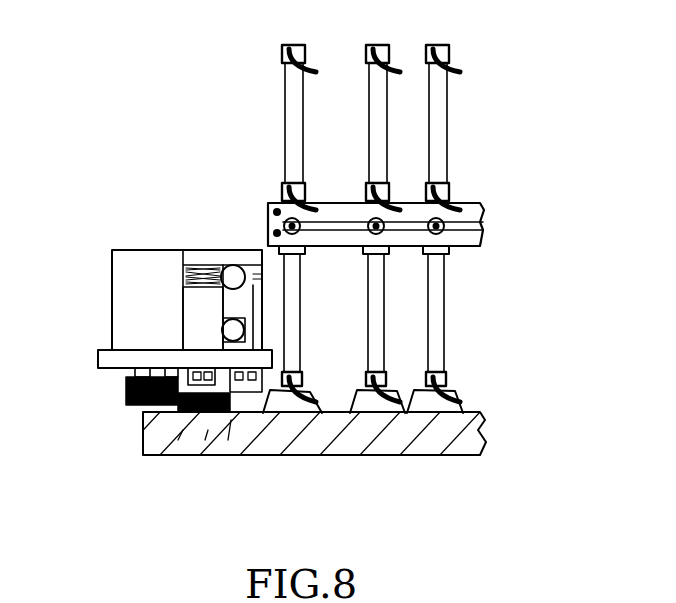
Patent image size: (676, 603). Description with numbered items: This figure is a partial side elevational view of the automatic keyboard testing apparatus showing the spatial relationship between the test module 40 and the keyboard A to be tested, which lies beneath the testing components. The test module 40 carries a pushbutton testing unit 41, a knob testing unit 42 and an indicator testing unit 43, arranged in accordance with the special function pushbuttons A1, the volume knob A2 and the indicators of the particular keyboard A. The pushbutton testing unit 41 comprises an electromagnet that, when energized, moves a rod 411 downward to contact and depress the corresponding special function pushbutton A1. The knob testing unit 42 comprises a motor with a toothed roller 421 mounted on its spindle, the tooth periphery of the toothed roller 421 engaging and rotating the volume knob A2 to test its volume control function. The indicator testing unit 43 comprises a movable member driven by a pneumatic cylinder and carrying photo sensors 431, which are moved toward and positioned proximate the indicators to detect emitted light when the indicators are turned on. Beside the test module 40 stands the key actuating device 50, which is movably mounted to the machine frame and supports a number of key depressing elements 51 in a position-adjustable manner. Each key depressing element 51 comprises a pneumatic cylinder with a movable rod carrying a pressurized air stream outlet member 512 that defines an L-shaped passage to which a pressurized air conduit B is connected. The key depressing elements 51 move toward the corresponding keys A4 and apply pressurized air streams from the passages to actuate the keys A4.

The key actuating device 50 is at (497, 188).
The key depressing element 51 is at (293, 103).
The pressurized air stream outlet member 512 is at (438, 274).
The pressurized air conduit B is at (390, 378).
The key A4 is at (278, 440).
The keyboard A is at (377, 440).
The photo sensor 431 is at (228, 440).
The special function pushbutton A1 is at (207, 440).
The volume knob A2 is at (180, 440).
The knob testing unit 42 is at (139, 265).
The indicator testing unit 43 is at (237, 262).
The pushbutton testing unit 41 is at (192, 304).
The test module 40 is at (120, 360).
The toothed roller 421 is at (125, 396).
The rod 411 is at (145, 428).